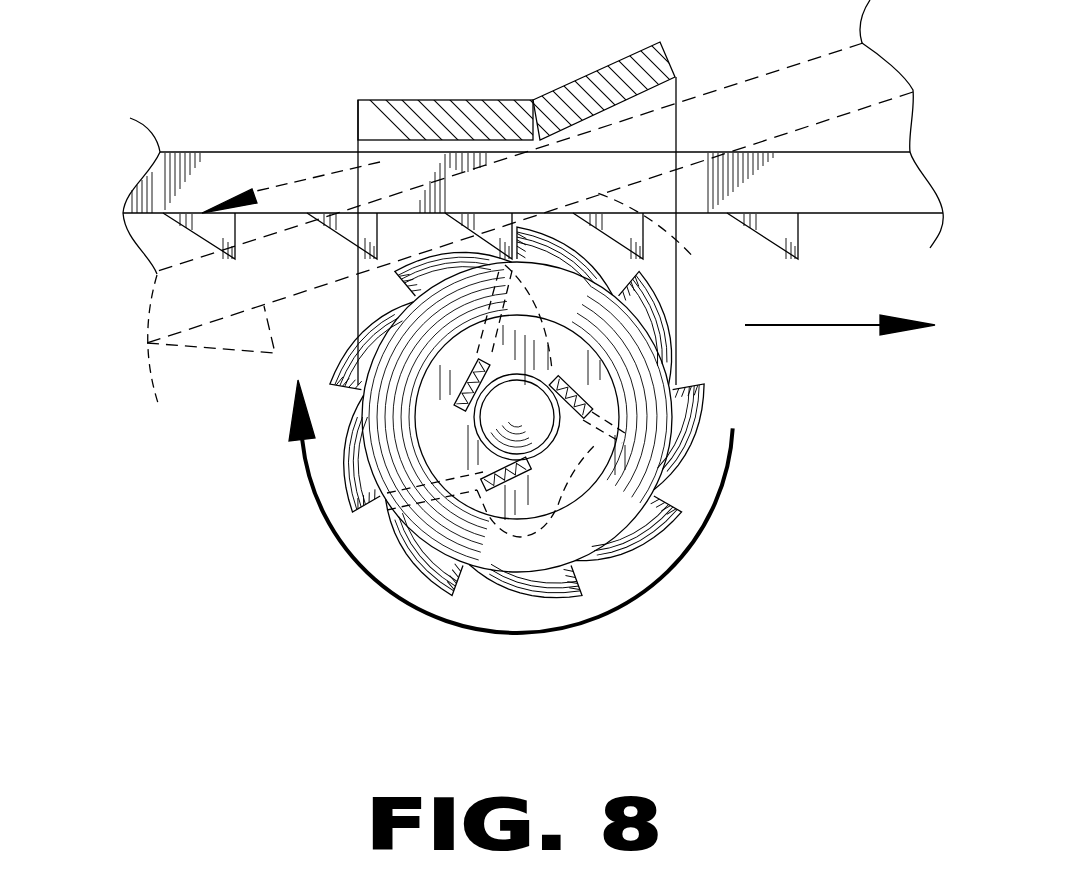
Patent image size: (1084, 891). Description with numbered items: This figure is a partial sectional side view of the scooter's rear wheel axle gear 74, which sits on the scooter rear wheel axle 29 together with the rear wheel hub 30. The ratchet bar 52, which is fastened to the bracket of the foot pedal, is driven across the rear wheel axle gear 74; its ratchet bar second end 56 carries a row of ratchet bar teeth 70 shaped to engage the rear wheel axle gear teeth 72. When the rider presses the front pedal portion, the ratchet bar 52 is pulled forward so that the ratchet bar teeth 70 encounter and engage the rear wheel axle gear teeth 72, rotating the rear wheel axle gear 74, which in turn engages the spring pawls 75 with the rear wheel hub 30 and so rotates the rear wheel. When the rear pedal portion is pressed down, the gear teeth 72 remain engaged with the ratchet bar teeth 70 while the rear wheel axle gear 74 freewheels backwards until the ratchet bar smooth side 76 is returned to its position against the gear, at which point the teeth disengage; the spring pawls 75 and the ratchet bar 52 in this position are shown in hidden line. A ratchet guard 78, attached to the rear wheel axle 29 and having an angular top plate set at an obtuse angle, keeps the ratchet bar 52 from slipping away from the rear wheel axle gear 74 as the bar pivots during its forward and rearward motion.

The scooter rear wheel axle 29 is at (517, 417).
The scooter rear wheel hub 30 is at (498, 377).
The ratchet bar 52 is at (843, 152).
The ratchet bar second end 56 is at (262, 152).
The ratchet bar teeth 70 is at (238, 243).
The rear wheel axle gear teeth 72 is at (340, 347).
The rear wheel axle gear 74 is at (415, 475).
The spring pawl 75 is at (503, 307).
The ratchet bar smooth side 76 is at (659, 245).
The ratchet guard 78 is at (676, 114).